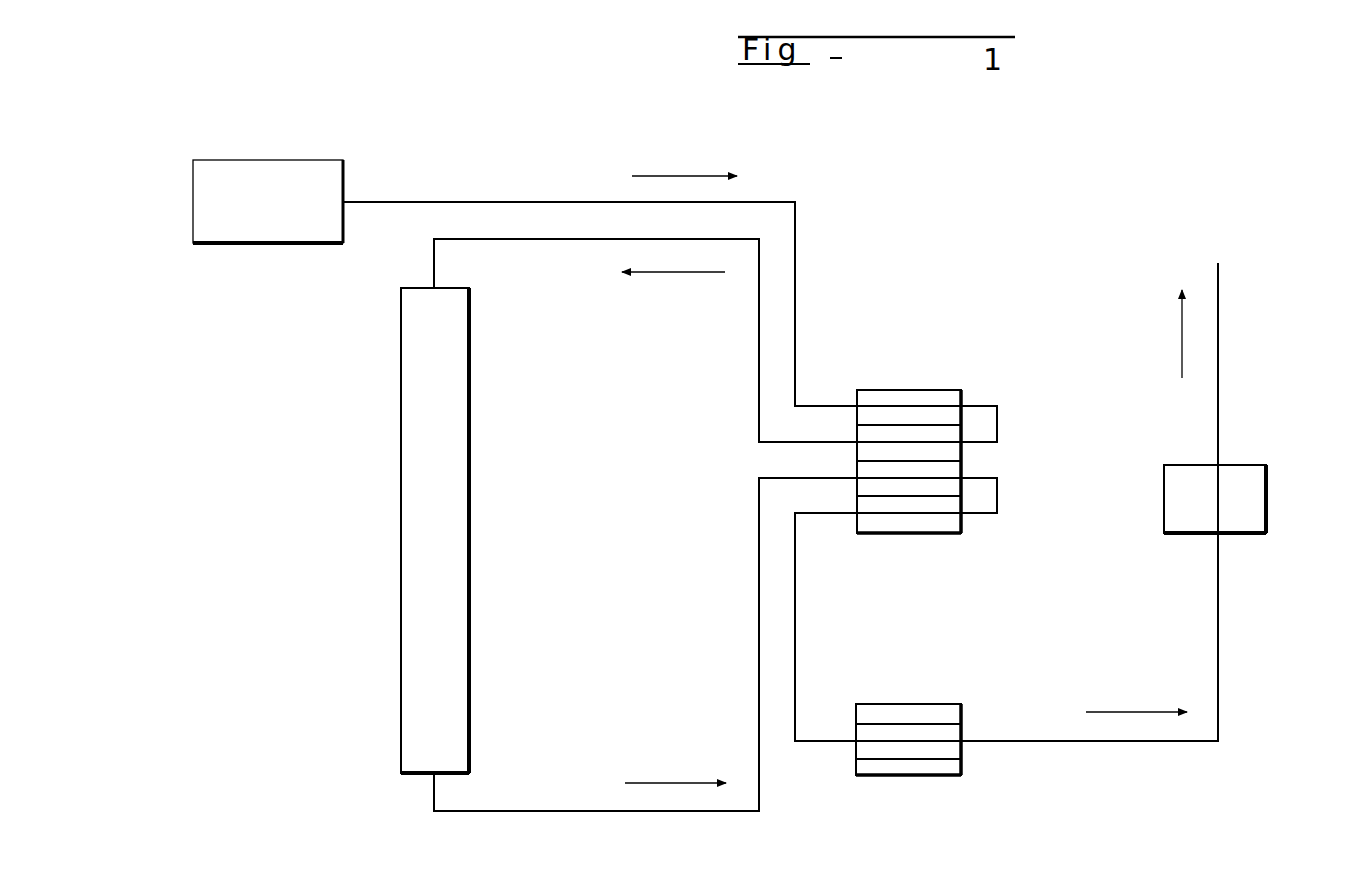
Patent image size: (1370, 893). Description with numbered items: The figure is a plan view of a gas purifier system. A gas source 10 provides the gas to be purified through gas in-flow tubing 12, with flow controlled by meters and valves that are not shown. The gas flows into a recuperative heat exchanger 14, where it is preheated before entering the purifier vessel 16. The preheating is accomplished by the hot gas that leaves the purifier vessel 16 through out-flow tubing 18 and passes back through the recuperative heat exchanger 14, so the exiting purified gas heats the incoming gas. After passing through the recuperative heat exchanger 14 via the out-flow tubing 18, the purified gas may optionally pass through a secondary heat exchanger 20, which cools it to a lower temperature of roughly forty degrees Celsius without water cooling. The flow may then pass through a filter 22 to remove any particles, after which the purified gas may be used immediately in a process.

The gas source 10 is at (307, 160).
The gas in-flow tubing 12 is at (775, 202).
The recuperative heat exchanger 14 is at (895, 390).
The purifier vessel 16 is at (456, 401).
The out-flow tubing 18 is at (795, 620).
The secondary heat exchanger 20 is at (897, 704).
The filter 22 is at (1266, 497).